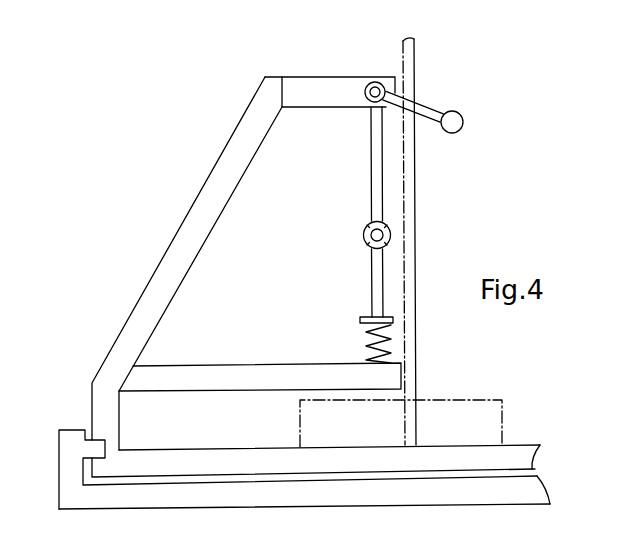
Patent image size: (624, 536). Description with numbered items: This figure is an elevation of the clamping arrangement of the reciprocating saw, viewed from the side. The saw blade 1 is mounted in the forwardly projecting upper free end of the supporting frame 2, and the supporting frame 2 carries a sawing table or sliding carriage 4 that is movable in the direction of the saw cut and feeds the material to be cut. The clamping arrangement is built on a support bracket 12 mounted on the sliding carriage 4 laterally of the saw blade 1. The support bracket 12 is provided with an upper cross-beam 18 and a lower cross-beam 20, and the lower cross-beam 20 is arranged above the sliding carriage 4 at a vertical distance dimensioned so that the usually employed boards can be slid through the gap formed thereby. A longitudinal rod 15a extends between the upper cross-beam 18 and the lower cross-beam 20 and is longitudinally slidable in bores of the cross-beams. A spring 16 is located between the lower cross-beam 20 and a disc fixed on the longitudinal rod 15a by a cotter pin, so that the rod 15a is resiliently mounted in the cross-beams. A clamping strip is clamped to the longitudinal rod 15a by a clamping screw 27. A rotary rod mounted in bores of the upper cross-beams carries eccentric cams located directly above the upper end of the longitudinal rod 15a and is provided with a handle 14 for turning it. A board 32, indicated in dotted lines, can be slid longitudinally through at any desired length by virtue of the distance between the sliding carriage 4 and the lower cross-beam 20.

The saw blade 1 is at (414, 63).
The supporting frame 2 is at (70, 428).
The sliding carriage 4 is at (507, 457).
The support bracket 12 is at (197, 193).
The handle 14 is at (429, 107).
The longitudinal rod 15a is at (370, 170).
The spring 16 is at (368, 333).
The upper cross-beam 18 is at (318, 76).
The lower cross-beam 20 is at (185, 366).
The clamping screw 27 is at (363, 235).
The board 32 is at (450, 420).